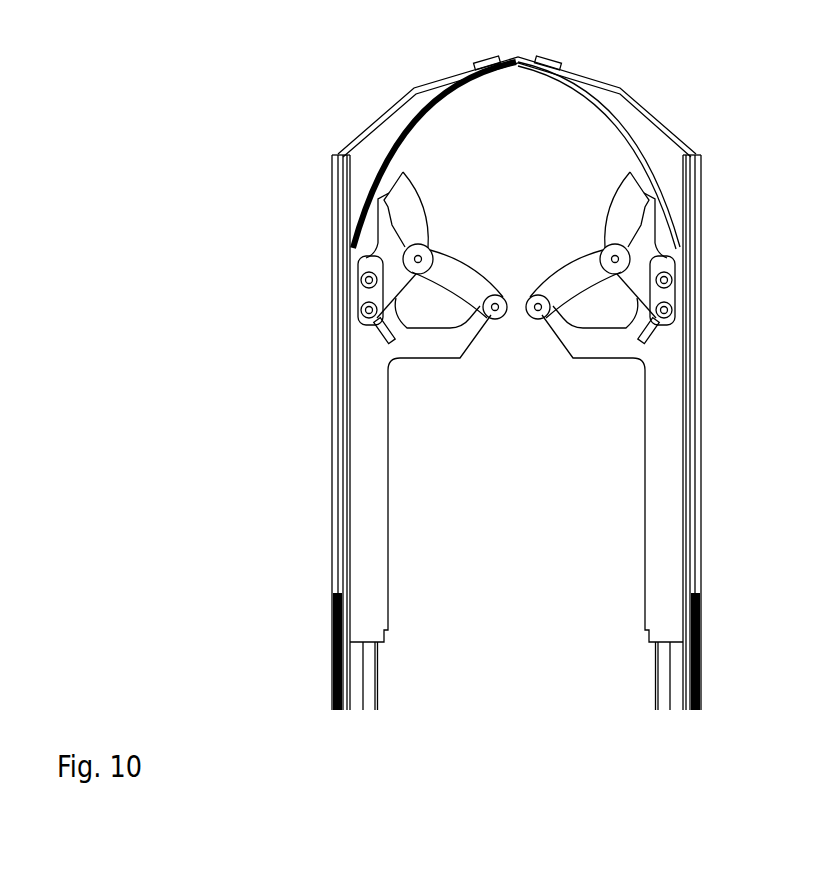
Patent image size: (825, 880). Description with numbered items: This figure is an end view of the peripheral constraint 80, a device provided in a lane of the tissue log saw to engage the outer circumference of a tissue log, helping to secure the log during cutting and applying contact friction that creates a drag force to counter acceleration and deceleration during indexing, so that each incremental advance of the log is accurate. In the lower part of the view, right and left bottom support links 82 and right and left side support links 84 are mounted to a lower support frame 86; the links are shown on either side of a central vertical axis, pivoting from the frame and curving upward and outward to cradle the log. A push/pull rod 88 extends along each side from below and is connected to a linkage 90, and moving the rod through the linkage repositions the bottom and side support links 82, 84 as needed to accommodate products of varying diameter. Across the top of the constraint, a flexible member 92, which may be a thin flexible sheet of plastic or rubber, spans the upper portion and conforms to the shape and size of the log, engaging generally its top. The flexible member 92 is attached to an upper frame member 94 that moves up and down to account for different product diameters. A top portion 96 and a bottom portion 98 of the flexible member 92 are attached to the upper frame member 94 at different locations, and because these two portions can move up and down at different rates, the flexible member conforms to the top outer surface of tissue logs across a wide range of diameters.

The peripheral constraint 80 is at (192, 184).
The bottom support links 82 is at (478, 292).
The side support links 84 is at (410, 212).
The lower support frame 86 is at (388, 500).
The push/pull rod 88 is at (377, 688).
The linkage 90 is at (373, 293).
The flexible member 92 is at (523, 68).
The upper frame member 94 is at (583, 82).
The top portion 96 is at (483, 57).
The bottom portion 98 is at (340, 405).